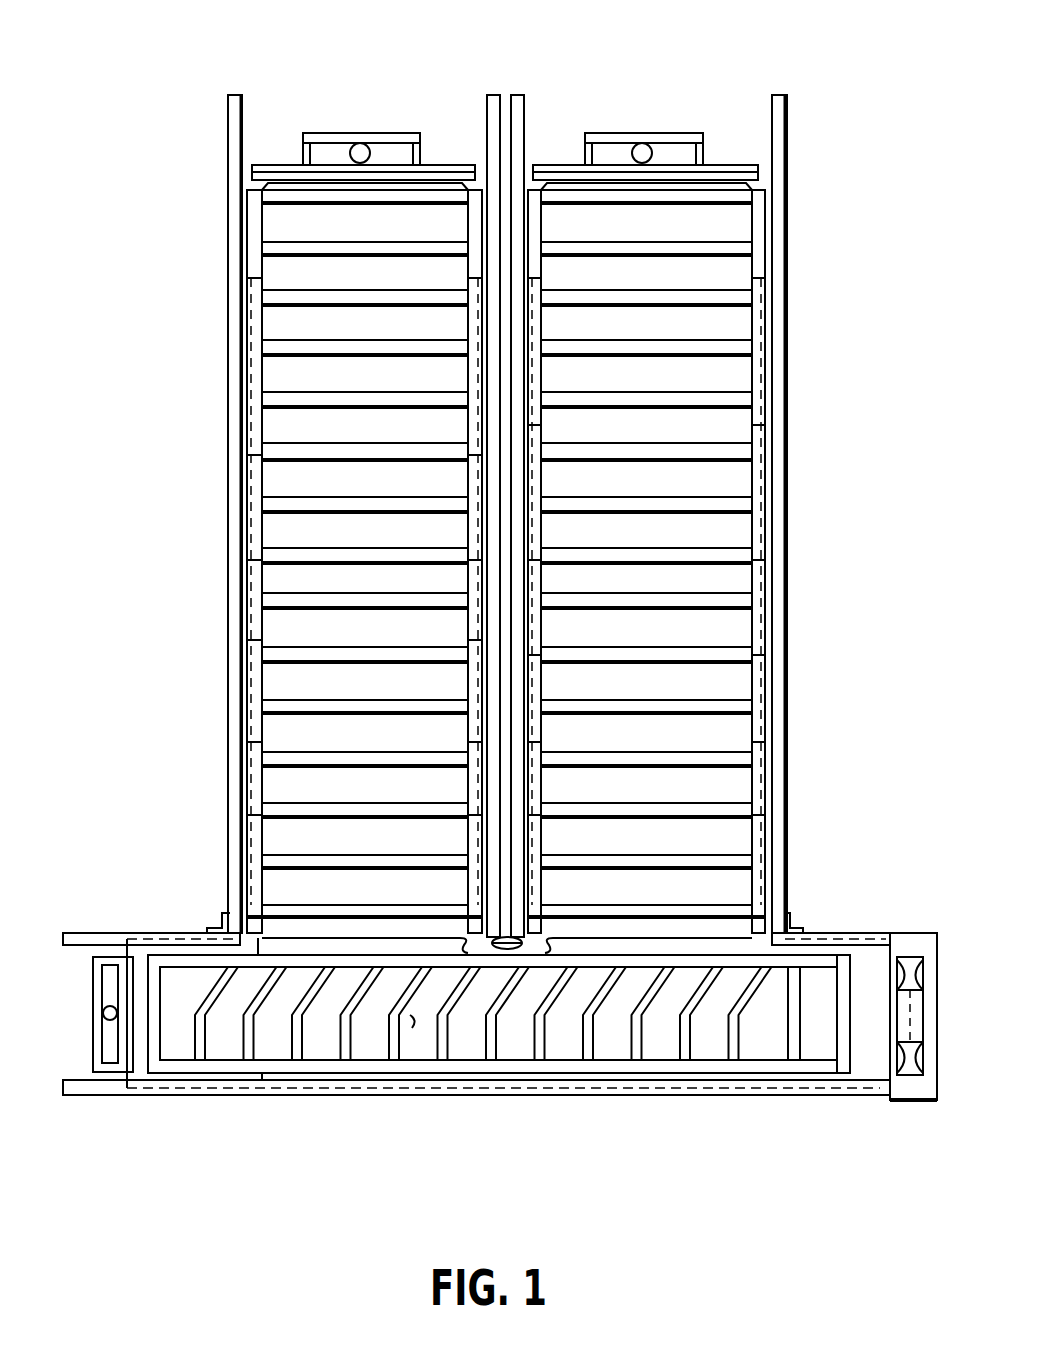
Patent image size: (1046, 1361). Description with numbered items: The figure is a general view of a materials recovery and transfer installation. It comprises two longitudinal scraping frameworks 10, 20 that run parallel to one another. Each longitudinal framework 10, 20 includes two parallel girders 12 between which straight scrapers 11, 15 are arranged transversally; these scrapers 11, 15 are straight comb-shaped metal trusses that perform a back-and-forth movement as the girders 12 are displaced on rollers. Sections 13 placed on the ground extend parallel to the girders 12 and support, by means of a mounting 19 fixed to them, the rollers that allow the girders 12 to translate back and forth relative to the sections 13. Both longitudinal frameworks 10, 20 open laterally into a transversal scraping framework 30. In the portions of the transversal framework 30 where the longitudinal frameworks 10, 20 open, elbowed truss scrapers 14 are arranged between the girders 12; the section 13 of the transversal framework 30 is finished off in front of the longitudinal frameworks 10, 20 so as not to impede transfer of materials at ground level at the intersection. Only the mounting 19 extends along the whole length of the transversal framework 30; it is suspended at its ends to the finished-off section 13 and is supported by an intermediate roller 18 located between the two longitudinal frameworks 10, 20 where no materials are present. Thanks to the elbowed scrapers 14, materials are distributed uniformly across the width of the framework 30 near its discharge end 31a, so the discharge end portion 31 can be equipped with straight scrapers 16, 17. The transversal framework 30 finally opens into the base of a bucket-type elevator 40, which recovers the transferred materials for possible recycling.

The longitudinal scraping framework 10 is at (205, 696).
The straight scraper 11 is at (295, 397).
The girder 12 is at (253, 497).
The section 13 is at (491, 98).
The elbowed truss scraper 14 is at (358, 1045).
The straight scraper 15 is at (300, 905).
The straight scraper 16 is at (793, 1043).
The straight scraper 17 is at (845, 1045).
The intermediate roller 18 is at (509, 935).
The mounting 19 is at (258, 948).
The longitudinal scraping framework 20 is at (796, 502).
The transversal scraping framework 30 is at (689, 1110).
The materials discharge end portion 31 is at (843, 1037).
The materials discharge end 31a is at (852, 985).
The elevator 40 is at (908, 918).